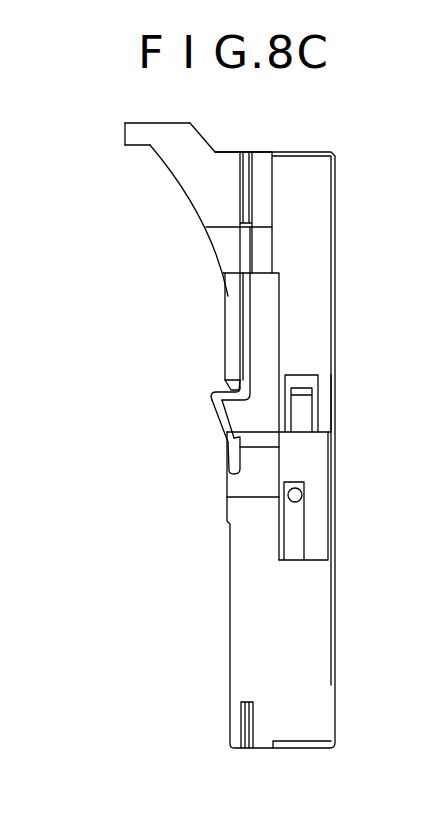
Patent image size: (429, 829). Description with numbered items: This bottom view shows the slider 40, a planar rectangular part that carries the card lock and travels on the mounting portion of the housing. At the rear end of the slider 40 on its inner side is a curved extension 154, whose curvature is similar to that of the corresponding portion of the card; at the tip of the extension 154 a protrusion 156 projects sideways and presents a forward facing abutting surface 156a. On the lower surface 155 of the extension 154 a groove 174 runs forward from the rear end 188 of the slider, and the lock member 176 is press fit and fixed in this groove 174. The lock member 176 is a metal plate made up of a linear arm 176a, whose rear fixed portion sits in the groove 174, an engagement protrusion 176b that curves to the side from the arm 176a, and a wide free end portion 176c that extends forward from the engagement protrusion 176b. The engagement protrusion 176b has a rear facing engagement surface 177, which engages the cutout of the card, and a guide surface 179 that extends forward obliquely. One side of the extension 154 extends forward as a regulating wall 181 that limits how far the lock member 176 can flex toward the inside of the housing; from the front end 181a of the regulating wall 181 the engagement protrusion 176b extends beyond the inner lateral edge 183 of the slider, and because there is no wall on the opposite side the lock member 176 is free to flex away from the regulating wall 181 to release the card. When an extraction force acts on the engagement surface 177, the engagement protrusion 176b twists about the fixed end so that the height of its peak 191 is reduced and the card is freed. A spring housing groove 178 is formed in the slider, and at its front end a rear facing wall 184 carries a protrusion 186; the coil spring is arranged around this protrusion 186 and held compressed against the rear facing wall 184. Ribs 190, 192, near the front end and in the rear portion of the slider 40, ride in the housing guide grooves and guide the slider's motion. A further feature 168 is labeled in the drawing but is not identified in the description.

The slider 40 is at (380, 166).
The curved extension 154 is at (187, 185).
The lower surface 155 is at (222, 176).
The protrusion 156 is at (147, 134).
The abutting surface 156a is at (137, 146).
The pin hole 168 is at (282, 498).
The groove 174 is at (253, 253).
The lock member 176 is at (235, 343).
The arm 176a is at (227, 294).
The engagement protrusion 176b is at (213, 392).
The free end portion 176c is at (229, 459).
The engagement surface 177 is at (225, 378).
The spring housing groove 178 is at (320, 280).
The guide surface 179 is at (224, 432).
The regulating wall 181 is at (230, 321).
The front end 181a is at (246, 399).
The inner lateral edge 183 is at (226, 486).
The rear facing wall 184 is at (323, 430).
The protrusion 186 is at (308, 392).
The rear end 188 is at (255, 151).
The rib 190 is at (243, 725).
The peak 191 is at (211, 397).
The rib 192 is at (258, 200).